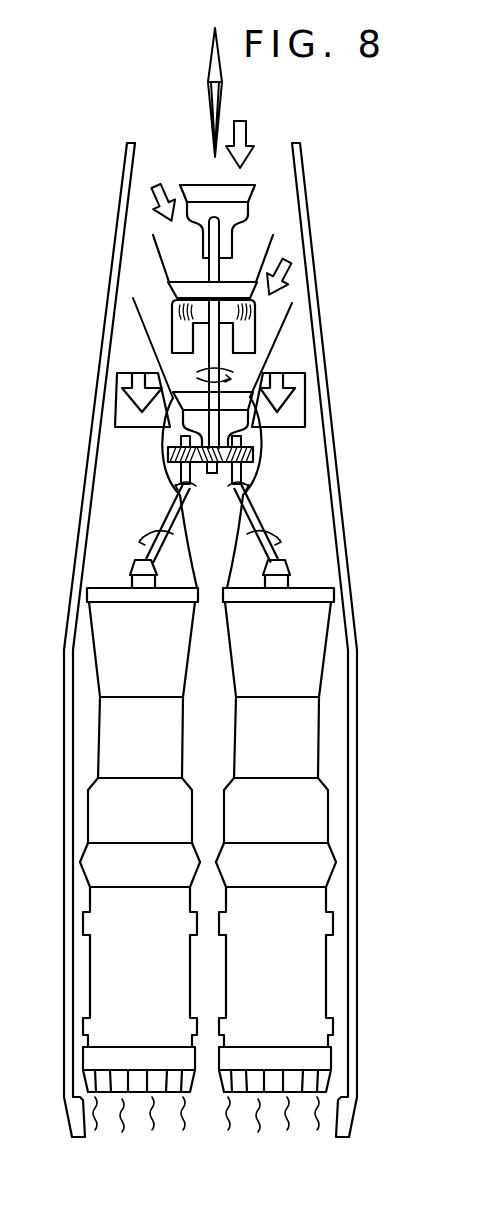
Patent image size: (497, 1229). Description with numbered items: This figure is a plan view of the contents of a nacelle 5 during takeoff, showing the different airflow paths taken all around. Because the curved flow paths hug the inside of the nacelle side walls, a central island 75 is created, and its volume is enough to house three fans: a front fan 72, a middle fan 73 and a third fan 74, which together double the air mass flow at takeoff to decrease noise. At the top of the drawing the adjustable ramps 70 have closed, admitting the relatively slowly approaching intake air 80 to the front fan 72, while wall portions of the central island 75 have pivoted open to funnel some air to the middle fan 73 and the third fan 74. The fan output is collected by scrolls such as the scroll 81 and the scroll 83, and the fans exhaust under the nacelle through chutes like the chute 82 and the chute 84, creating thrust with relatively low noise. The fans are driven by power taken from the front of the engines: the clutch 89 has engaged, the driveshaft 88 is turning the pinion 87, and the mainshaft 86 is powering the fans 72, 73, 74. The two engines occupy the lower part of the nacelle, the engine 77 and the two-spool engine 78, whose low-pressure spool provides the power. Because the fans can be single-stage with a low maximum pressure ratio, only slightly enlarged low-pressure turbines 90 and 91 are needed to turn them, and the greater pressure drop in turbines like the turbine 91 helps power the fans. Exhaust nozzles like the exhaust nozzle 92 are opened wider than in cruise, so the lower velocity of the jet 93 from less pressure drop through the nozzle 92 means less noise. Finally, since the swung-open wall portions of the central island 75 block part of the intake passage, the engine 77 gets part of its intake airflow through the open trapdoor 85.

The outer housing shell 5 is at (77, 550).
The adjustable ramps 70 is at (197, 95).
The front fan 72 is at (240, 191).
The middle fan 73 is at (180, 288).
The third fan 74 is at (237, 399).
The central island 75 is at (146, 333).
The engine 77 is at (152, 829).
The two-spool engine 78 is at (290, 829).
The intake air 80 is at (243, 122).
The scroll 81 is at (240, 208).
The chute 82 is at (204, 238).
The scroll 83 is at (173, 313).
The chute 84 is at (252, 345).
The trapdoor 85 is at (130, 412).
The mainshaft 86 is at (212, 473).
The pinion 87 is at (255, 457).
The driveshaft 88 is at (257, 503).
The clutch 89 is at (287, 568).
The low-pressure turbine 90 is at (327, 850).
The low-pressure turbine 91 is at (190, 850).
The exhaust nozzle 92 is at (138, 1077).
The jet 93 is at (120, 1115).